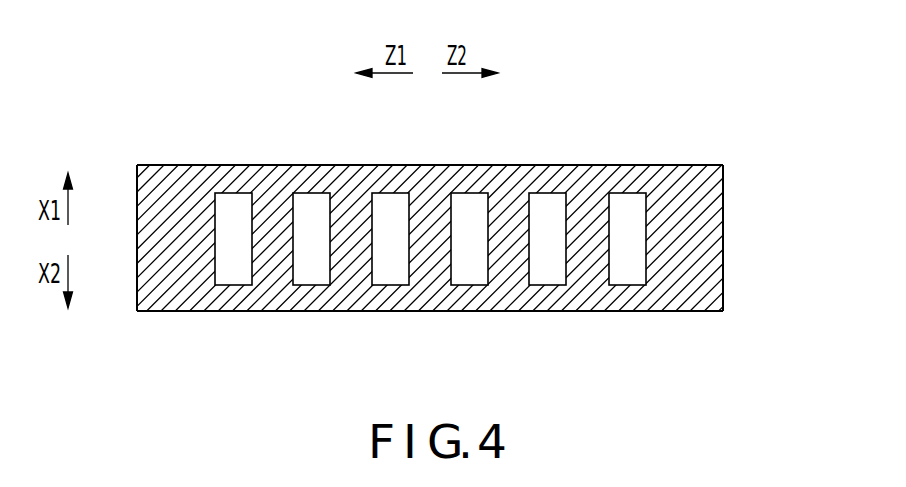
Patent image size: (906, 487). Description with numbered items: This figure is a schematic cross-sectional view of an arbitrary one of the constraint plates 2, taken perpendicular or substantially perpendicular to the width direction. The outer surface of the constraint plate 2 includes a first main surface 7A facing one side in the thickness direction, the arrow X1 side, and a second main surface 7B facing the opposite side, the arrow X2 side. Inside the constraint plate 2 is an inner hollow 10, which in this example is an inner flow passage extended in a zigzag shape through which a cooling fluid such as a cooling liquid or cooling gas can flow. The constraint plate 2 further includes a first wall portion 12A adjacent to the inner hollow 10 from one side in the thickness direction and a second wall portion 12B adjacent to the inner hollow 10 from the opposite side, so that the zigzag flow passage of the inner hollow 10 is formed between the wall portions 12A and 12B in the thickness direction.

The constraint plate 2 is at (456, 199).
The first main surface 7A is at (474, 165).
The second main surface 7B is at (505, 311).
The inner hollow 10 is at (388, 270).
The first wall portion 12A is at (343, 181).
The second wall portion 12B is at (318, 295).